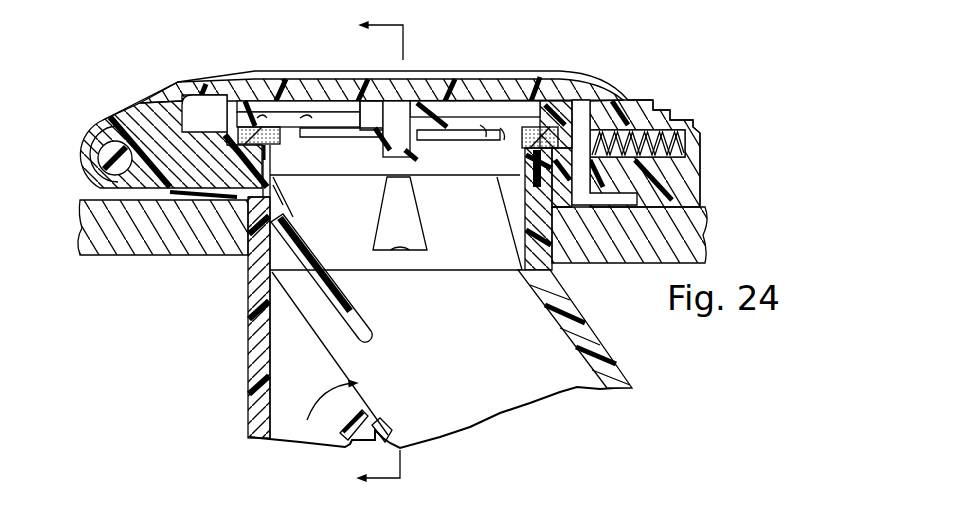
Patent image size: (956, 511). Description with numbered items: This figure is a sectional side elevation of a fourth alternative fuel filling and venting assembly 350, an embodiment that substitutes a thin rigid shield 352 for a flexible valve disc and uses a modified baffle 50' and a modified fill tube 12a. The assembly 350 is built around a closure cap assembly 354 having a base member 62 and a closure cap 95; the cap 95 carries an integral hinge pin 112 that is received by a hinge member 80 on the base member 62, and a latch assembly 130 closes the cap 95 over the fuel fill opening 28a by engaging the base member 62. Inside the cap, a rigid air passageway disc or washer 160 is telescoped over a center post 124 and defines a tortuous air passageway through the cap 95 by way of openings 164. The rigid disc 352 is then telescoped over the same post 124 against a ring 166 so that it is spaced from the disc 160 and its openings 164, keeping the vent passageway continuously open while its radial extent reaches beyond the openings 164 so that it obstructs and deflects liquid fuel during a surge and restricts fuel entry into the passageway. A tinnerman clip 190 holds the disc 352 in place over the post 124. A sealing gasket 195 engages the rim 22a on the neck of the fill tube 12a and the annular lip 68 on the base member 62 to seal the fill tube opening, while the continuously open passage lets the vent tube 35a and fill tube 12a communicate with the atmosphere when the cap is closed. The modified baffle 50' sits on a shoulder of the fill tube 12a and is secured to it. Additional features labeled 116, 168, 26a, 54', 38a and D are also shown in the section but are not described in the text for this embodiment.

The hinge member 80 is at (137, 113).
The integral hinge pin 112 is at (115, 152).
The closure cap 95 is at (245, 78).
The shoulder 116 is at (226, 109).
The air passageway disc 160 is at (293, 110).
The openings 164 is at (327, 113).
The ring 166 is at (427, 105).
The retainer leg 168 is at (550, 110).
The closure cap assembly 354 is at (575, 75).
The fuel filling and venting assembly 350 is at (708, 80).
The latch assembly 130 is at (707, 137).
The sealing gasket 195 is at (280, 135).
The tinnerman clip 190 is at (381, 140).
The rigid shield 352 is at (484, 139).
The center post 124 is at (410, 156).
The annular lip 68 is at (540, 152).
The fuel fill opening 28a is at (360, 180).
The rim 22a is at (287, 193).
The base member 62 is at (213, 173).
The corner 26a is at (248, 197).
The modified baffle 50' is at (396, 251).
The strut 54' is at (326, 293).
The bottom lug 38a is at (360, 408).
The vent tube 35a is at (245, 413).
The modified fill tube 12a is at (600, 357).
The container body D is at (707, 237).